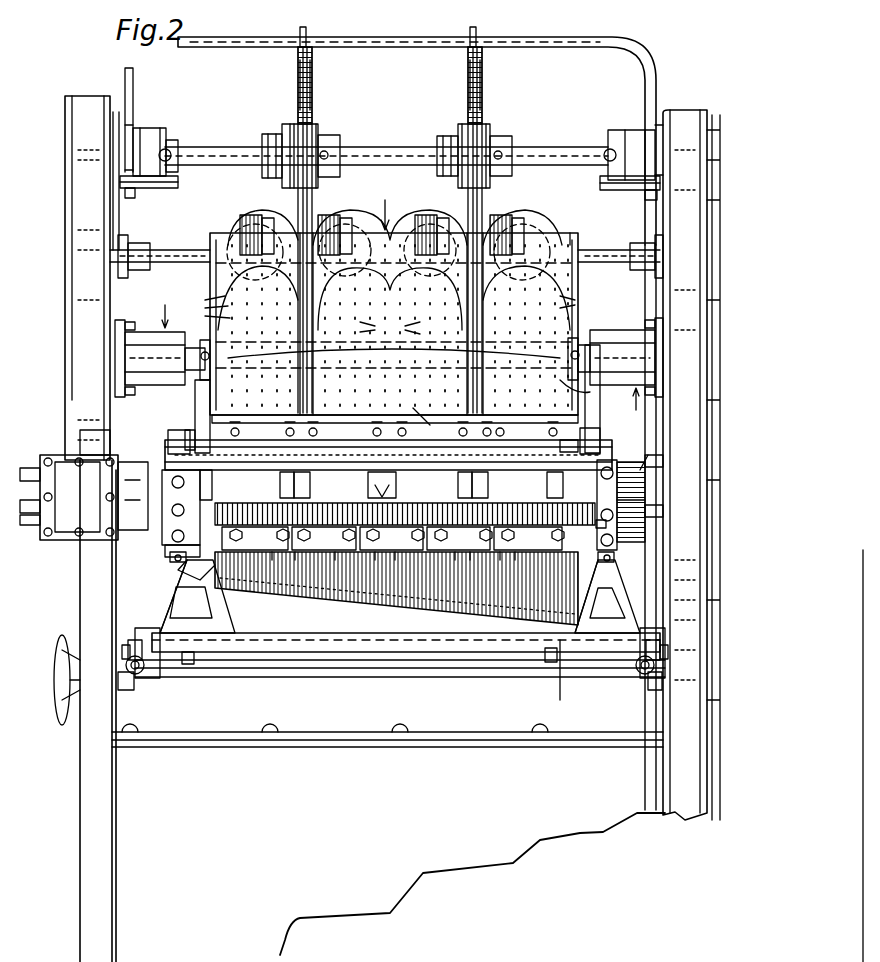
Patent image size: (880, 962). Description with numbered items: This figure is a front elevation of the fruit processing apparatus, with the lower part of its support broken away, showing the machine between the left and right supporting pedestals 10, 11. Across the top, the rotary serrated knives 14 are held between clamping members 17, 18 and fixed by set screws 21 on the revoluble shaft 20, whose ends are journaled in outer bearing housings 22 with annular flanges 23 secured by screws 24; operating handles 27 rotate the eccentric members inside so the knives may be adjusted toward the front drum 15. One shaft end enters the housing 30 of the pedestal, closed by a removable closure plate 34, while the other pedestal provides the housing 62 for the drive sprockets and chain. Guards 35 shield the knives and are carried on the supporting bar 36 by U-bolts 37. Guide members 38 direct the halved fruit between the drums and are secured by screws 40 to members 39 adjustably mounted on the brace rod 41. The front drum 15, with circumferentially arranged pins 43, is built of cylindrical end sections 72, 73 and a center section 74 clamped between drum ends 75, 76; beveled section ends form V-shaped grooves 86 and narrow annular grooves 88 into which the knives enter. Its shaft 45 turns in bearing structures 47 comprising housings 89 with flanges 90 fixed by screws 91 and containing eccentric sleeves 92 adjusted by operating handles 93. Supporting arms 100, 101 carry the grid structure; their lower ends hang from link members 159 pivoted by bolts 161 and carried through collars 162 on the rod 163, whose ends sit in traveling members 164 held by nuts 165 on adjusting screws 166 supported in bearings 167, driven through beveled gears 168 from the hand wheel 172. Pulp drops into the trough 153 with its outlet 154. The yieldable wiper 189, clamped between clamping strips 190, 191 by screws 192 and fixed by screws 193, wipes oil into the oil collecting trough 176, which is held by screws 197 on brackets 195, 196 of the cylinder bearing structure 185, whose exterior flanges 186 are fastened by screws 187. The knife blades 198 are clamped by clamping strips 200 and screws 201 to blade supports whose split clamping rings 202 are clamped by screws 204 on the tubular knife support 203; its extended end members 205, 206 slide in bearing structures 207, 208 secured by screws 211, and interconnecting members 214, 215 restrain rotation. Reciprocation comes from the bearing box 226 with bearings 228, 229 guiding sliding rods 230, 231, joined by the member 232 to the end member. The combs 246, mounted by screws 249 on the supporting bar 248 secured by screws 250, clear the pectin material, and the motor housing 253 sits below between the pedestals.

The supporting pedestal 10 is at (92, 880).
The supporting pedestal 11 is at (690, 760).
The rotary serrated knives 14 is at (484, 104).
The front drum 15 is at (575, 290).
The clamping member 17 is at (450, 142).
The clamping member 18 is at (498, 145).
The revoluble shaft 20 is at (390, 150).
The set screws 21 is at (503, 152).
The outer bearing housings 22 is at (618, 190).
The exterior annular flanges 23 is at (648, 200).
The screws 24 is at (630, 140).
The operating handles 27 is at (606, 160).
The housing 30 is at (80, 168).
The removable closure plate 34 is at (66, 142).
The guards 35 is at (483, 84).
The supporting bar 36 is at (540, 40).
The U-bolts 37 is at (476, 32).
The guide members 38 is at (456, 215).
The members 39 is at (540, 222).
The screws 40 is at (520, 258).
The rod 41 is at (615, 262).
The circumferentially arranged pins 43 is at (387, 315).
The shaft 45 is at (590, 394).
The bearing structures 47 is at (400, 356).
The housing 62 is at (700, 325).
The cylindrical end section 72 is at (222, 396).
The cylindrical end section 73 is at (540, 401).
The cylindrical center section 74 is at (382, 305).
The drum end 75 is at (210, 240).
The drum end 76 is at (570, 245).
The V-shaped grooves 86 is at (500, 228).
The annular grooves 88 is at (440, 350).
The outer housings 89 is at (390, 357).
The flanges 90 is at (658, 338).
The screws 91 is at (655, 388).
The eccentric sleeves 92 is at (582, 352).
The operating handles 93 is at (573, 355).
The supporting arm 100 is at (195, 410).
The supporting arm 101 is at (588, 418).
The trough 153 is at (330, 600).
The outlet 154 is at (562, 685).
The link members 159 is at (612, 615).
The bolts 161 is at (633, 603).
The collars 162 is at (548, 660).
The rod 163 is at (330, 652).
The traveling members 164 is at (648, 648).
The nuts 165 is at (666, 655).
The adjusting screws 166 is at (654, 668).
The bearings 167 is at (662, 682).
The beveled gears 168 is at (640, 680).
The hand wheel 172 is at (58, 682).
The oil collecting trough 176 is at (580, 460).
The bearing structure 185 is at (660, 490).
The exterior flanges 186 is at (655, 480).
The screws 187 is at (662, 508).
The yieldable wiper 189 is at (412, 398).
The clamping strip 190 is at (276, 420).
The clamping strip 191 is at (500, 428).
The screws 192 is at (385, 472).
The screws 193 is at (400, 428).
The bracket 195 is at (183, 442).
The bracket 196 is at (612, 452).
The screws 197 is at (600, 440).
The knife blades 198 is at (522, 503).
The clamping strips 200 is at (393, 538).
The screws 201 is at (467, 472).
The split clamping rings 202 is at (500, 560).
The tubular knife support 203 is at (272, 552).
The screws 204 is at (515, 560).
The extended end member 205 is at (170, 556).
The extended end member 206 is at (660, 500).
The bearing structure 207 is at (172, 470).
The bearing structure 208 is at (606, 525).
The screws 211 is at (650, 460).
The interconnecting member 214 is at (208, 505).
The interconnecting member 215 is at (592, 505).
The bearing box 226 is at (66, 450).
The bearing 228 is at (25, 496).
The bearing 229 is at (110, 500).
The sliding rod 230 is at (27, 468).
The sliding rod 231 is at (27, 525).
The member 232 is at (135, 530).
The combs 246 is at (470, 560).
The supporting bar 248 is at (615, 563).
The screws 249 is at (455, 560).
The screws 250 is at (612, 558).
The housing 253 is at (345, 834).